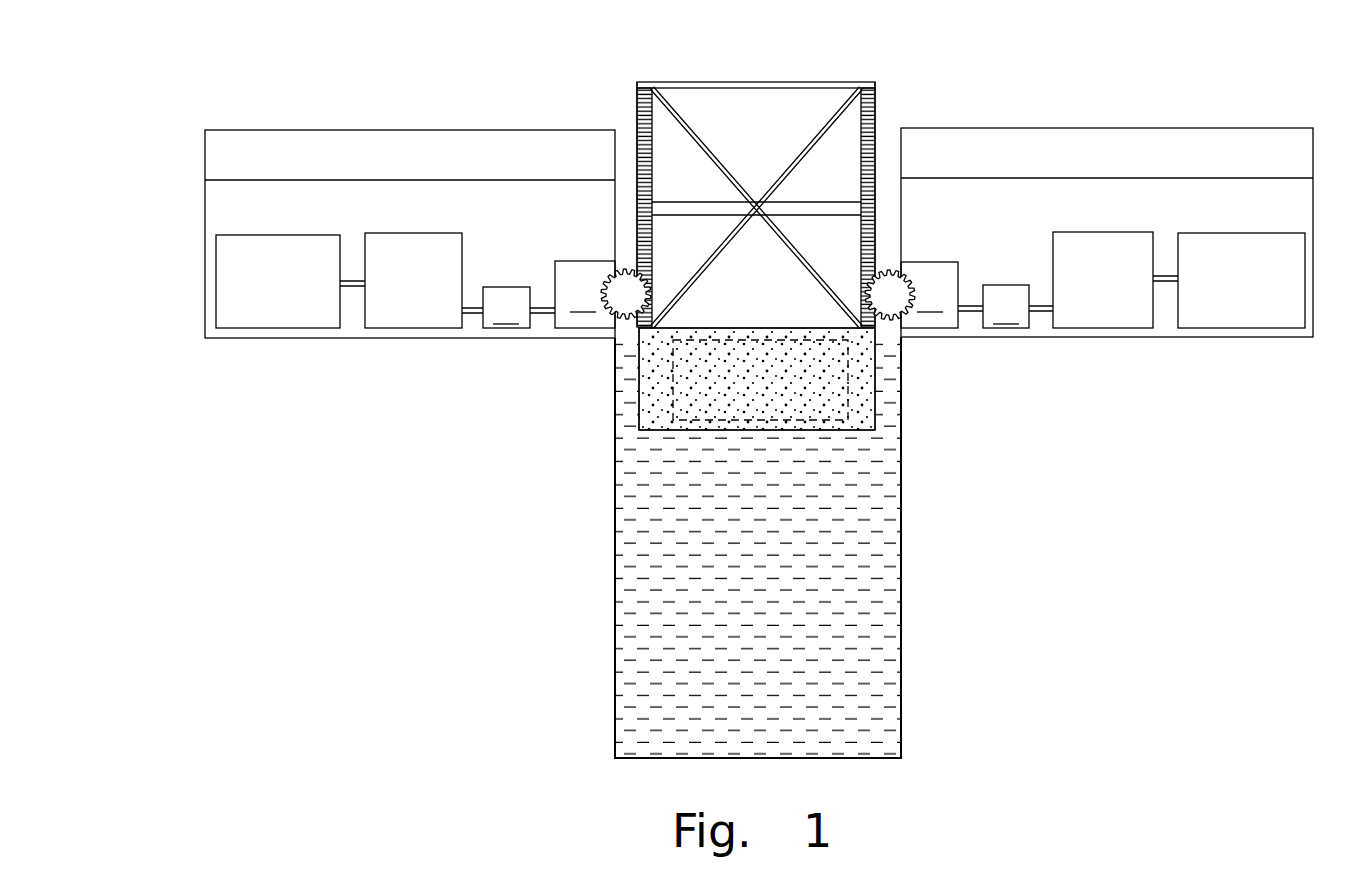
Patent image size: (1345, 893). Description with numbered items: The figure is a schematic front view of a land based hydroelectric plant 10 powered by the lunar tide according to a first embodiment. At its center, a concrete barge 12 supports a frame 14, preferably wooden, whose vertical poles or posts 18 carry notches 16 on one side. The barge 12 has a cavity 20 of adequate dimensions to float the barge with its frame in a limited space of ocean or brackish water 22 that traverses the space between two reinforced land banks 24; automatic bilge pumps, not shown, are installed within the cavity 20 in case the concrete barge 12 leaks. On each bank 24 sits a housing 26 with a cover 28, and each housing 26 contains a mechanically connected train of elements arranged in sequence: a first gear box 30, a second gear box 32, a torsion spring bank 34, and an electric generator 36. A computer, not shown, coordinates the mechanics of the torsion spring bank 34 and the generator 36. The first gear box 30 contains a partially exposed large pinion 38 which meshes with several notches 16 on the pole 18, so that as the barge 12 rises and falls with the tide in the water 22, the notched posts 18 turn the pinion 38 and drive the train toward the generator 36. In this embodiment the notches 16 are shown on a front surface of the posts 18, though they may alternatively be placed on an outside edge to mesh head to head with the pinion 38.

The land based hydroelectric plant 10 is at (1048, 42).
The concrete barge 12 is at (865, 408).
The frame 14 is at (703, 78).
The notches 16 is at (637, 130).
The vertical poles or posts 18 is at (637, 80).
The cavity 20 is at (688, 408).
The ocean or brackish water 22 is at (853, 678).
The reinforced land banks 24 is at (615, 463).
The housing 26 is at (205, 197).
The cover 28 is at (306, 148).
The first gear box 30 is at (756, 294).
The second gear box 32 is at (756, 306).
The torsion spring bank 34 is at (393, 323).
The electric generator 36 is at (260, 322).
The large pinion 38 is at (627, 320).